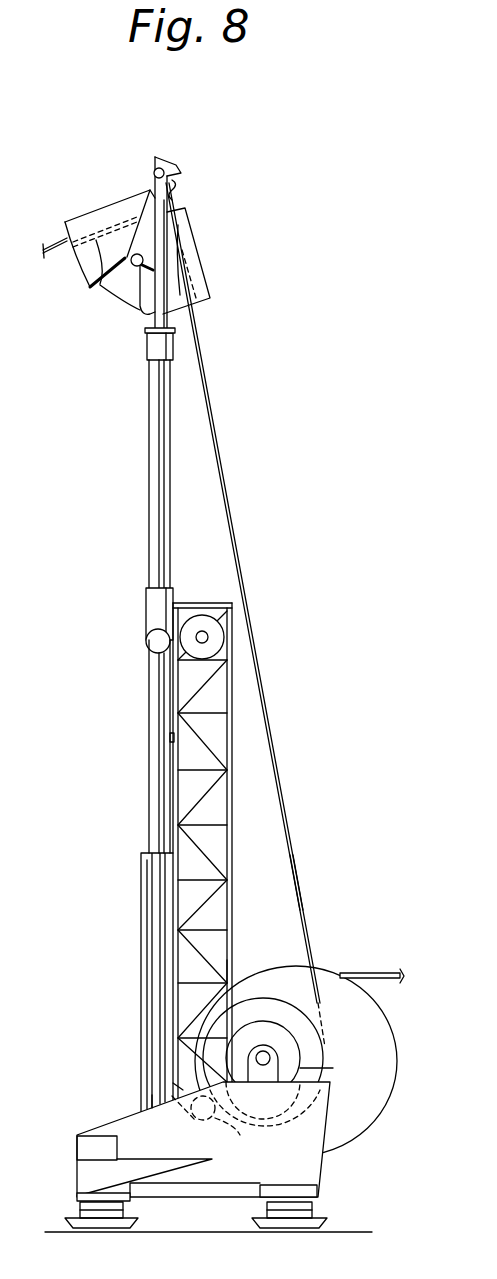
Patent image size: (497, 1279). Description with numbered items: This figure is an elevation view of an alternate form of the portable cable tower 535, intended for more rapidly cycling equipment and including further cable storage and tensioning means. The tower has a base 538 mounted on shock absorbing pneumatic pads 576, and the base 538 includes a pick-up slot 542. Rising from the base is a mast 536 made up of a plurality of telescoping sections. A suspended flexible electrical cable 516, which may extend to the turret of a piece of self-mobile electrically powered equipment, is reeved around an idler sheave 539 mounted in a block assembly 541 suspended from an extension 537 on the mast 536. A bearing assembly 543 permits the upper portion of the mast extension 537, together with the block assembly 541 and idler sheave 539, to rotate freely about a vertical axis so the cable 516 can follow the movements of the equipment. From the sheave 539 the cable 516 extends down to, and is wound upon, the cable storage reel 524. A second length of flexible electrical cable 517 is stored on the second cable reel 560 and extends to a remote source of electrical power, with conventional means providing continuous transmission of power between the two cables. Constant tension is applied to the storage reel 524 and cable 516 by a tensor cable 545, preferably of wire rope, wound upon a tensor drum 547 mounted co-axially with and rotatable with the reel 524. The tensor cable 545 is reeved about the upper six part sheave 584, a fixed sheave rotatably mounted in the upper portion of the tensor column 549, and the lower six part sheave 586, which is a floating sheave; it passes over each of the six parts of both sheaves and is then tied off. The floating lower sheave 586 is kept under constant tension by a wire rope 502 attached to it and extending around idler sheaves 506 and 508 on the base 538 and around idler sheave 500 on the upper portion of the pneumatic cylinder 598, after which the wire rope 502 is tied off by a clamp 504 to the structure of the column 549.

The suspended flexible electrical cable 516 is at (52, 232).
The block assembly 541 is at (187, 222).
The idler sheave 539 is at (122, 293).
The extension 537 is at (173, 311).
The bearing assembly 543 is at (147, 350).
The mast 536 is at (147, 597).
The idler sheave 500 is at (147, 636).
The upper six part sheave 584 is at (205, 636).
The clamp 504 is at (168, 738).
The tensor column 549 is at (233, 793).
The pneumatic cylinder 598 is at (155, 882).
The portable cable tower 535 is at (314, 879).
The tensor cable 545 is at (232, 966).
The second length of flexible electrical cable 517 is at (381, 973).
The cable storage reel 524 is at (337, 1035).
The cable reel 560 is at (398, 1051).
The tensor drum 547 is at (334, 1069).
The lower six part sheave 586 is at (180, 1085).
The idler sheave 506 is at (158, 1106).
The wire rope 502 is at (178, 1125).
The idler sheave 508 is at (222, 1125).
The pick-up slot 542 is at (110, 1160).
The base 538 is at (305, 1168).
The shock absorbing pneumatic pads 576 is at (247, 1208).